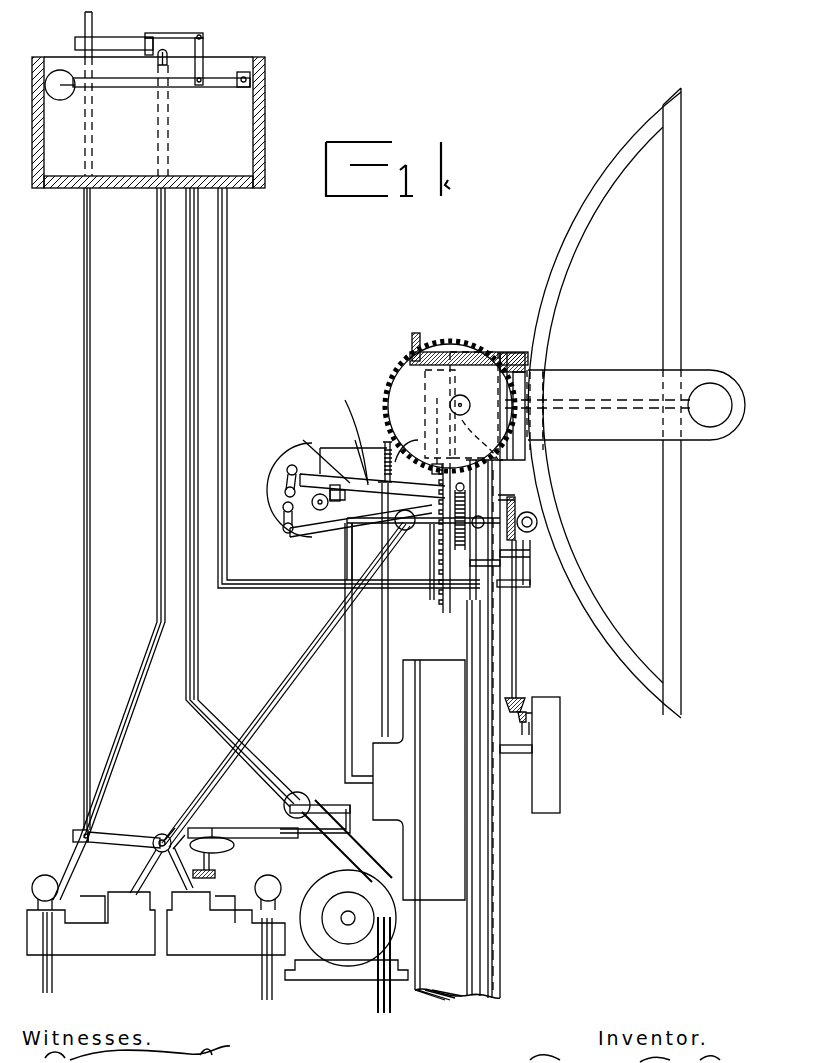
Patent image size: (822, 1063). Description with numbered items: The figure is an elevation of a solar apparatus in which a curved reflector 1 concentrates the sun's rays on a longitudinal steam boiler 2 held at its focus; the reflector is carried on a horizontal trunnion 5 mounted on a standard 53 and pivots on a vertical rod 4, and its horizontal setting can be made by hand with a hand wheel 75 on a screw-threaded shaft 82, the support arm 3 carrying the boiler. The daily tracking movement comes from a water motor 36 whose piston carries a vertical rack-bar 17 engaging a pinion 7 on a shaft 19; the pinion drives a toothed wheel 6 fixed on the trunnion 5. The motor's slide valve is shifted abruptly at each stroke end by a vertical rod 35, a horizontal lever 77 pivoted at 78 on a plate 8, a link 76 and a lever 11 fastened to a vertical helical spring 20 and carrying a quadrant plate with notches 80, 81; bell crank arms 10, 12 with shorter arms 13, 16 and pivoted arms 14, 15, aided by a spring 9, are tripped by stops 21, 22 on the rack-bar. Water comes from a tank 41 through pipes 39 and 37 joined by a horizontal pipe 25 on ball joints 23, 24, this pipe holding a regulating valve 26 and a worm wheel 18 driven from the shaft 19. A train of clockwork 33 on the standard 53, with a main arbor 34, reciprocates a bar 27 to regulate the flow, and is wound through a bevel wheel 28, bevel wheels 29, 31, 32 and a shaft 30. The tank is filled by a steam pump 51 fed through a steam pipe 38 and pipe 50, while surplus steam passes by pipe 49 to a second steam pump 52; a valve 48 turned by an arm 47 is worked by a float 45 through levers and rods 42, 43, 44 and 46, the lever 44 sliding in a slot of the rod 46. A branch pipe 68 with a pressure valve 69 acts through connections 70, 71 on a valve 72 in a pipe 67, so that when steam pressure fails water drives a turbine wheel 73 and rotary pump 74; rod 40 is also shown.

The curved reflector 1 is at (583, 265).
The longitudinal steam boiler 2 is at (710, 405).
The reflector support arm 3 is at (603, 380).
The vertical rod 4 is at (513, 353).
The horizontal trunnion 5 is at (462, 395).
The toothed wheel 6 is at (432, 338).
The pinion 7 is at (502, 472).
The plate 8 is at (322, 465).
The spring 9 is at (385, 450).
The bell crank lever arm 10 is at (345, 452).
The lever 11 is at (316, 452).
The bell crank lever arm 12 is at (330, 520).
The shorter arm 13 is at (287, 470).
The arm 14 is at (285, 490).
The arm 15 is at (283, 508).
The shorter arm 16 is at (283, 527).
The rack-bar 17 is at (440, 525).
The worm wheel 18 is at (470, 565).
The shaft 19 is at (461, 406).
The vertical helical spring 20 is at (420, 470).
The upper pin or stop 21 is at (435, 462).
The lower pin or stop 22 is at (465, 600).
The ball joint 23 is at (370, 525).
The ball joint 24 is at (537, 518).
The horizontal pipe 25 is at (437, 527).
The valve 26 is at (505, 498).
The bar 27 is at (510, 600).
The bevel wheel 28 is at (515, 537).
The bevel wheel 29 is at (530, 555).
The shaft 30 is at (517, 637).
The bevel wheel 31 is at (515, 698).
The bevel wheel 32 is at (530, 703).
The train of clockwork 33 is at (546, 755).
The main arbor 34 is at (518, 758).
The vertical rod 35 is at (382, 668).
The water motor 36 is at (419, 780).
The pipe 37 is at (345, 728).
The steam pipe 38 is at (325, 662).
The pipe 39 is at (349, 388).
The float rod 40 is at (157, 289).
The tank 41 is at (148, 122).
The lever or rod 42 is at (161, 91).
The lever 43 is at (198, 50).
The lever 44 is at (116, 44).
The float 45 is at (60, 85).
The rod 46 is at (70, 421).
The arm 47 is at (118, 832).
The valve 48 is at (160, 815).
The pipe 49 is at (161, 871).
The pipe 50 is at (158, 852).
The steam pump 51 is at (91, 934).
The steam pump 52 is at (226, 937).
The standard 53 is at (457, 934).
The pipe 67 is at (186, 400).
The branch pipe 68 is at (212, 872).
The pressure valve 69 is at (234, 848).
The connection 70 is at (243, 823).
The connection 71 is at (315, 809).
The valve 72 is at (297, 800).
The turbine wheel 73 is at (310, 880).
The rotary pump 74 is at (348, 918).
The hand wheel 75 is at (412, 345).
The link 76 is at (322, 488).
The horizontal lever 77 is at (345, 435).
The pivot 78 is at (354, 451).
The notch 80 is at (292, 532).
The notch 81 is at (280, 447).
The shaft 82 is at (456, 362).